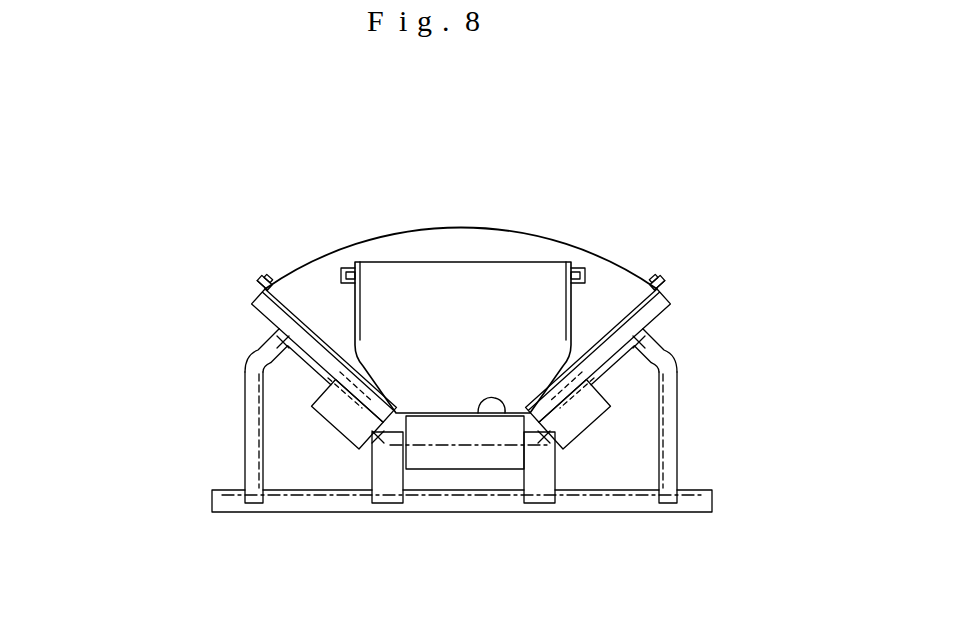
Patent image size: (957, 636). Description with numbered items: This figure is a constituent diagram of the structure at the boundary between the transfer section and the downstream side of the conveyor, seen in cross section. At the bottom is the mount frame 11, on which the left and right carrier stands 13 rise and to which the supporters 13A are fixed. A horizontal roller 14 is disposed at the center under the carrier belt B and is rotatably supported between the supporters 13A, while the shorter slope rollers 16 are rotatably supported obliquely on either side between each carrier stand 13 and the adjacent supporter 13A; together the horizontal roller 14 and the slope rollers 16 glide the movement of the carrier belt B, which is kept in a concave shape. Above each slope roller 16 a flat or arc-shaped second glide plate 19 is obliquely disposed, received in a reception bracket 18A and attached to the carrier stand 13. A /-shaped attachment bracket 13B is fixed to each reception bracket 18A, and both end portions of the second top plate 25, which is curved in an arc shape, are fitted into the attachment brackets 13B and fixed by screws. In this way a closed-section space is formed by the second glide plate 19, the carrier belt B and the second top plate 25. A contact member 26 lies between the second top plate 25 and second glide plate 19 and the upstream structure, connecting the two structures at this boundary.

The mount frame 11 is at (213, 505).
The carrier stand 13 is at (248, 430).
The supporter 13A is at (392, 485).
The attachment bracket 13B is at (255, 290).
The horizontal roller 14 is at (447, 458).
The slope roller 16 is at (352, 438).
The reception bracket 18A is at (266, 317).
The second glide plate 19 is at (244, 368).
The second top plate 25 is at (518, 231).
The contact member 26 is at (390, 240).
The carrier belt B is at (504, 414).